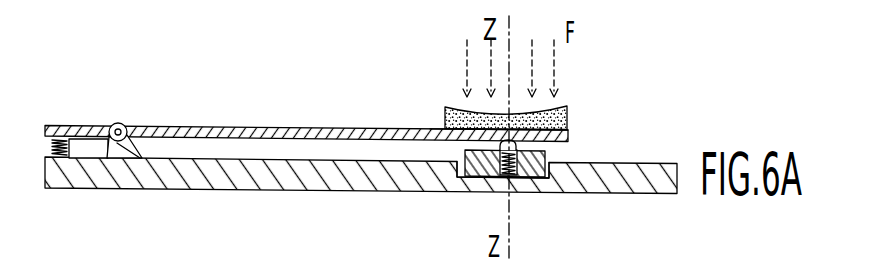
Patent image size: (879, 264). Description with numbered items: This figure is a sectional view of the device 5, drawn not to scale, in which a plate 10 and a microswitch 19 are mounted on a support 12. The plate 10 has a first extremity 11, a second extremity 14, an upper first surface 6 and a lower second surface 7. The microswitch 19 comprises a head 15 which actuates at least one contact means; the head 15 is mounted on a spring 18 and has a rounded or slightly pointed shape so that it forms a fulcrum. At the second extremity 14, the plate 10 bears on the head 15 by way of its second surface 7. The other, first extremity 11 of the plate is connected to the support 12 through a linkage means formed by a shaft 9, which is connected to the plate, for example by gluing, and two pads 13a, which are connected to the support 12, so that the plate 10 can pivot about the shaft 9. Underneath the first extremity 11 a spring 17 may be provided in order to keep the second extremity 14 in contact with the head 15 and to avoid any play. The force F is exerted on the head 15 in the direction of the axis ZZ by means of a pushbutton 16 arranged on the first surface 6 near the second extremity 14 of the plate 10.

The pressing device 5 is at (118, 208).
The first surface 6 is at (306, 98).
The second surface 7 is at (557, 145).
The shaft 9 is at (123, 124).
The plate 10 is at (306, 98).
The first extremity 11 is at (86, 126).
The support 12 is at (632, 163).
The pads 13a is at (110, 125).
The second extremity 14 is at (435, 120).
The head 15 is at (530, 193).
The pushbutton 16 is at (568, 118).
The spring 17 is at (52, 143).
The spring 18 is at (497, 190).
The microswitch 19 is at (462, 182).